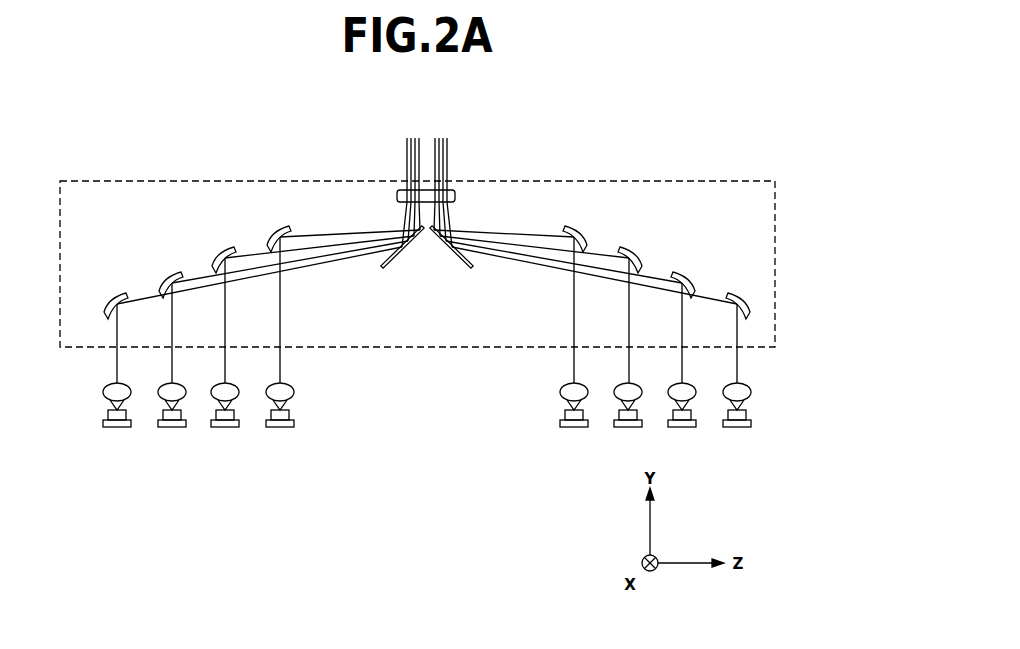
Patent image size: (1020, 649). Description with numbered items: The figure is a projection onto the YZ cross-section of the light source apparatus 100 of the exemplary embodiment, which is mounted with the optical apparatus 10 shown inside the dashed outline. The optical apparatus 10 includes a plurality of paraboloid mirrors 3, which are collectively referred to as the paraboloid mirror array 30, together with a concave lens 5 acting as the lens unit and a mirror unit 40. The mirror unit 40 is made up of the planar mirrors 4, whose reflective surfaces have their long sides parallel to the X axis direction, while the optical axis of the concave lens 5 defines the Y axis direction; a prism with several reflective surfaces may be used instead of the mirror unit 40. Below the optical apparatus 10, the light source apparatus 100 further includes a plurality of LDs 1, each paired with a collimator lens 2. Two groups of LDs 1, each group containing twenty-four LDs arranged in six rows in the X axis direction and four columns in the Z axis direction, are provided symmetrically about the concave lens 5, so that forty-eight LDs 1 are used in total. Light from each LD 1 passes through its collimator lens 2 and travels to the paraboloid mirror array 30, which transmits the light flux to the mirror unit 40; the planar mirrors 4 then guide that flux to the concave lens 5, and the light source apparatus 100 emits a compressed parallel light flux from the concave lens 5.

The light source apparatus 100 is at (228, 136).
The optical apparatus 10 is at (147, 181).
The paraboloid mirror array 30 is at (91, 292).
The paraboloid mirror 3 is at (290, 225).
The concave lens 5 is at (454, 193).
The planar mirror 4 is at (398, 257).
The mirror unit 40 is at (475, 300).
The collimator lens 2 is at (284, 389).
The LD 1 is at (290, 423).